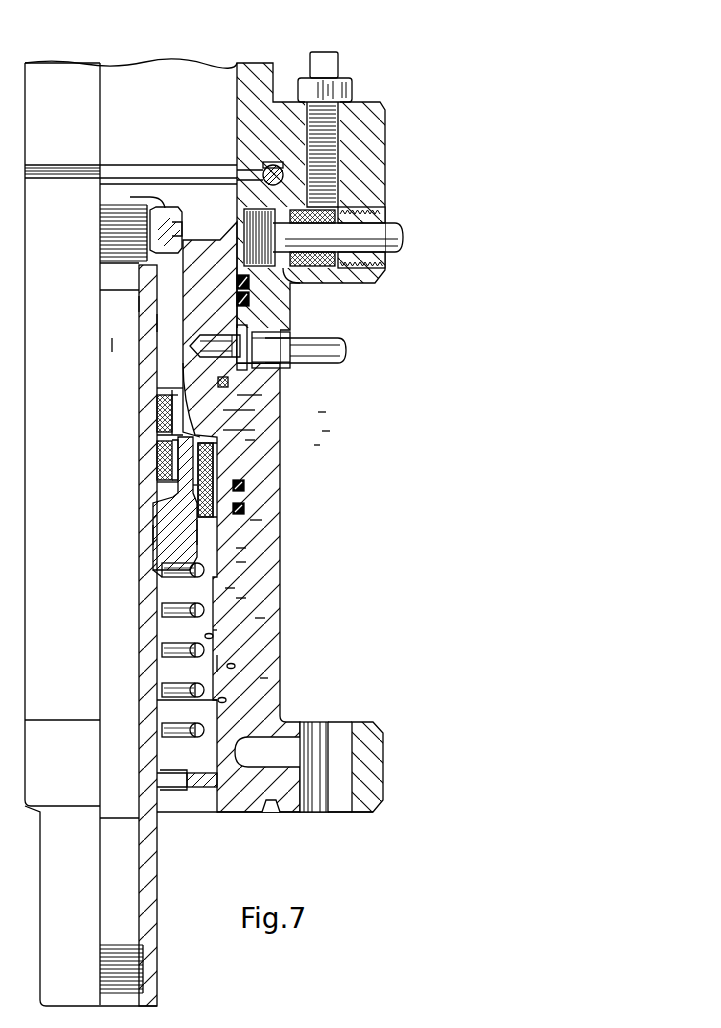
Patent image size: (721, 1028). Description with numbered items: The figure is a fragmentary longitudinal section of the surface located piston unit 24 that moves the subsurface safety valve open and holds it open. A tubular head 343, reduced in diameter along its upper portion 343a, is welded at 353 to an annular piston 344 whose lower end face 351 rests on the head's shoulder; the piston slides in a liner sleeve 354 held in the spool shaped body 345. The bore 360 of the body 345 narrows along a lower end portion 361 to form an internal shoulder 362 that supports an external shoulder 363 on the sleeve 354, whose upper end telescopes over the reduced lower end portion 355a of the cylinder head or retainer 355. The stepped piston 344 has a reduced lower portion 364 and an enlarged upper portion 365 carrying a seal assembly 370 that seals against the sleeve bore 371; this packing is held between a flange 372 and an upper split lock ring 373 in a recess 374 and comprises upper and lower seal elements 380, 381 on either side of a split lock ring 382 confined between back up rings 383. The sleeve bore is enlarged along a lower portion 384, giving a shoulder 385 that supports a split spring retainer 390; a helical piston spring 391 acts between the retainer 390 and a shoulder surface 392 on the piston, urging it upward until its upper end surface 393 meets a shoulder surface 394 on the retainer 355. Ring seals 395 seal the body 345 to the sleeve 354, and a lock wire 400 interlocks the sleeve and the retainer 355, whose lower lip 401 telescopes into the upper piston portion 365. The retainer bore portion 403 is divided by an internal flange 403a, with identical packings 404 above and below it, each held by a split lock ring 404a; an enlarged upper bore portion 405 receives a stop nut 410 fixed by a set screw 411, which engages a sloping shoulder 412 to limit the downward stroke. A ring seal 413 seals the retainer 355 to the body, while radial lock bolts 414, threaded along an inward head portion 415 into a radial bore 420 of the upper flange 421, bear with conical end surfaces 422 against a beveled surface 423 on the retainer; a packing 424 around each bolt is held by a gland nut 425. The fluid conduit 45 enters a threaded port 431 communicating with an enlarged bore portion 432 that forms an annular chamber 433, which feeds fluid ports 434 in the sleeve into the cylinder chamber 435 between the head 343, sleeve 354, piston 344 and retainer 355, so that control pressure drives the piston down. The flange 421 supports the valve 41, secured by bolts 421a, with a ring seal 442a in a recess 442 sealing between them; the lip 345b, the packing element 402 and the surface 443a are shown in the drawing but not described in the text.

The piston unit 24 is at (135, 43).
The valve 41 is at (386, 100).
The fluid conduit 45 is at (338, 342).
The tubular head 343 is at (160, 892).
The reduced upper portion of head 343a is at (158, 322).
The annular piston 344 is at (152, 537).
The spool shaped body 345 is at (275, 571).
The flange lip 345b is at (370, 808).
The lower end face of piston 351 is at (260, 618).
The weld 353 is at (155, 562).
The liner sleeve 354 is at (230, 592).
The annular cylinder head or retainer 355 is at (200, 252).
The reduced lower end portion of retainer 355a is at (262, 399).
The bore of body 360 is at (180, 528).
The lower end portion of body bore 361 is at (228, 808).
The internal annular shoulder 362 is at (258, 742).
The external annular shoulder on sleeve 363 is at (312, 722).
The lower portion of piston 364 is at (185, 506).
The enlarged upper portion of piston 365 is at (175, 479).
The seal assembly 370 is at (255, 523).
The bore of liner sleeve 371 is at (214, 636).
The external annular flange 372 is at (240, 562).
The upper split lock ring 373 is at (318, 445).
The external annular recess 374 is at (250, 440).
The upper resilient seal element 380 is at (216, 470).
The lower resilient seal element 381 is at (240, 548).
The split lock ring 382 is at (190, 492).
The split back up rings 383 is at (250, 486).
The enlarged lower bore portion of sleeve 384 is at (220, 705).
The internal shoulder of sleeve 385 is at (205, 790).
The split spring retainer 390 is at (188, 792).
The helical piston spring 391 is at (265, 678).
The downwardly facing annular shoulder surface 392 is at (240, 598).
The upper end surface of piston 393 is at (185, 368).
The downwardly facing shoulder surface on retainer 394 is at (177, 412).
The ring seals 395 is at (250, 508).
The lock wire 400 is at (237, 380).
The annular flange or lip 401 is at (190, 458).
The packing 402 is at (220, 455).
The lower bore portion of retainer 403 is at (160, 404).
The internal annular flange 403a is at (160, 448).
The annular packings 404 is at (165, 416).
The split lock ring 404a is at (165, 390).
The enlarged upper bore portion of retainer 405 is at (192, 280).
The stop nut 410 is at (130, 197).
The set screw 411 is at (200, 202).
The sloping shoulder 412 is at (110, 338).
The ring seal 413 is at (250, 300).
The radial lock bolts 414 is at (390, 240).
The inward head portion 415 is at (283, 272).
The radial bore 420 is at (372, 215).
The upper flange of body 421 is at (368, 188).
The bolts 421a is at (322, 77).
The conical inward end surfaces 422 is at (178, 226).
The upper outer beveled surface 423 is at (253, 252).
The packing 424 is at (328, 262).
The gland nut 425 is at (380, 262).
The threaded port 431 is at (268, 350).
The enlarged bore portion 432 is at (322, 416).
The annular chamber 433 is at (240, 406).
The fluid ports 434 is at (240, 436).
The annular cylinder chamber 435 is at (326, 431).
The recess 442 is at (262, 183).
The ring seal 442a is at (262, 165).
The threaded connection 443a is at (140, 303).